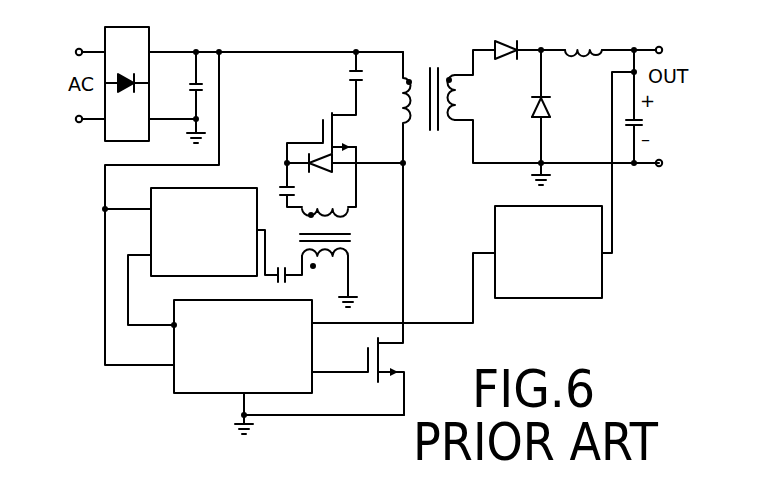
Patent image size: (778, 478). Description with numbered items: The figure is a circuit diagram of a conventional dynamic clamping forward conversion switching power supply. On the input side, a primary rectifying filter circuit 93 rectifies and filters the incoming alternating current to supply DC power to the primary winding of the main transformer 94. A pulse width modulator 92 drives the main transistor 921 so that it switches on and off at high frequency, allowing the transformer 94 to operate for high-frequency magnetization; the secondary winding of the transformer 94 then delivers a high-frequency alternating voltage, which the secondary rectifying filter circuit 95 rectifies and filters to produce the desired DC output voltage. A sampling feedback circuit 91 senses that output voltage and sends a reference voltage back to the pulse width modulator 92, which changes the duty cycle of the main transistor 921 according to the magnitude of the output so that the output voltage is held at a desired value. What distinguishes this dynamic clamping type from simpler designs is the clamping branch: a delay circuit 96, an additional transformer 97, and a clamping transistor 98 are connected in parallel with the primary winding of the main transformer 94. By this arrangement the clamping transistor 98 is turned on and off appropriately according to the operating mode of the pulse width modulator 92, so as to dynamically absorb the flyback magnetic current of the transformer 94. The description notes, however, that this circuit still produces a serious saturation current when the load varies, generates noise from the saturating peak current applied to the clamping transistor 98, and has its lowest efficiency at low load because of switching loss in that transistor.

The sampling feedback circuit 91 is at (595, 275).
The pulse width modulator 92 is at (195, 388).
The main transistor 921 is at (400, 365).
The primary rectifying filter circuit 93 is at (186, 44).
The transformer 94 is at (434, 57).
The secondary rectifying filter circuit 95 is at (574, 38).
The delay circuit 96 is at (228, 190).
The additional transformer 97 is at (350, 241).
The clamping transistor 98 is at (346, 122).